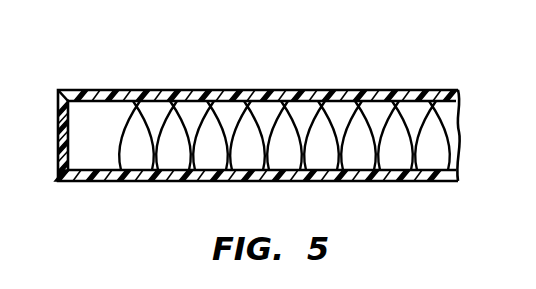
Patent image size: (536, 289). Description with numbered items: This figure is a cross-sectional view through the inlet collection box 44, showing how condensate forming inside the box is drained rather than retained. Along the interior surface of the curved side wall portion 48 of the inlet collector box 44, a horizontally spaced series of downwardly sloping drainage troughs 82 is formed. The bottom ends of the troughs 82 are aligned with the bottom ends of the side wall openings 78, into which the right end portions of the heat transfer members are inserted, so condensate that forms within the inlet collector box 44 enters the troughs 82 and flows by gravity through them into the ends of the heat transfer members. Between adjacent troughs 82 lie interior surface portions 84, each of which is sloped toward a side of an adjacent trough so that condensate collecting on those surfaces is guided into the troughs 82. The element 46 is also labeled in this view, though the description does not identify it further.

The inlet collection box 44 is at (49, 182).
The tubular wall 46 is at (107, 181).
The curved side wall portion 48 is at (100, 90).
The side wall openings 78 is at (357, 172).
The drainage troughs 82 is at (141, 112).
The interior surface portions 84 is at (282, 112).